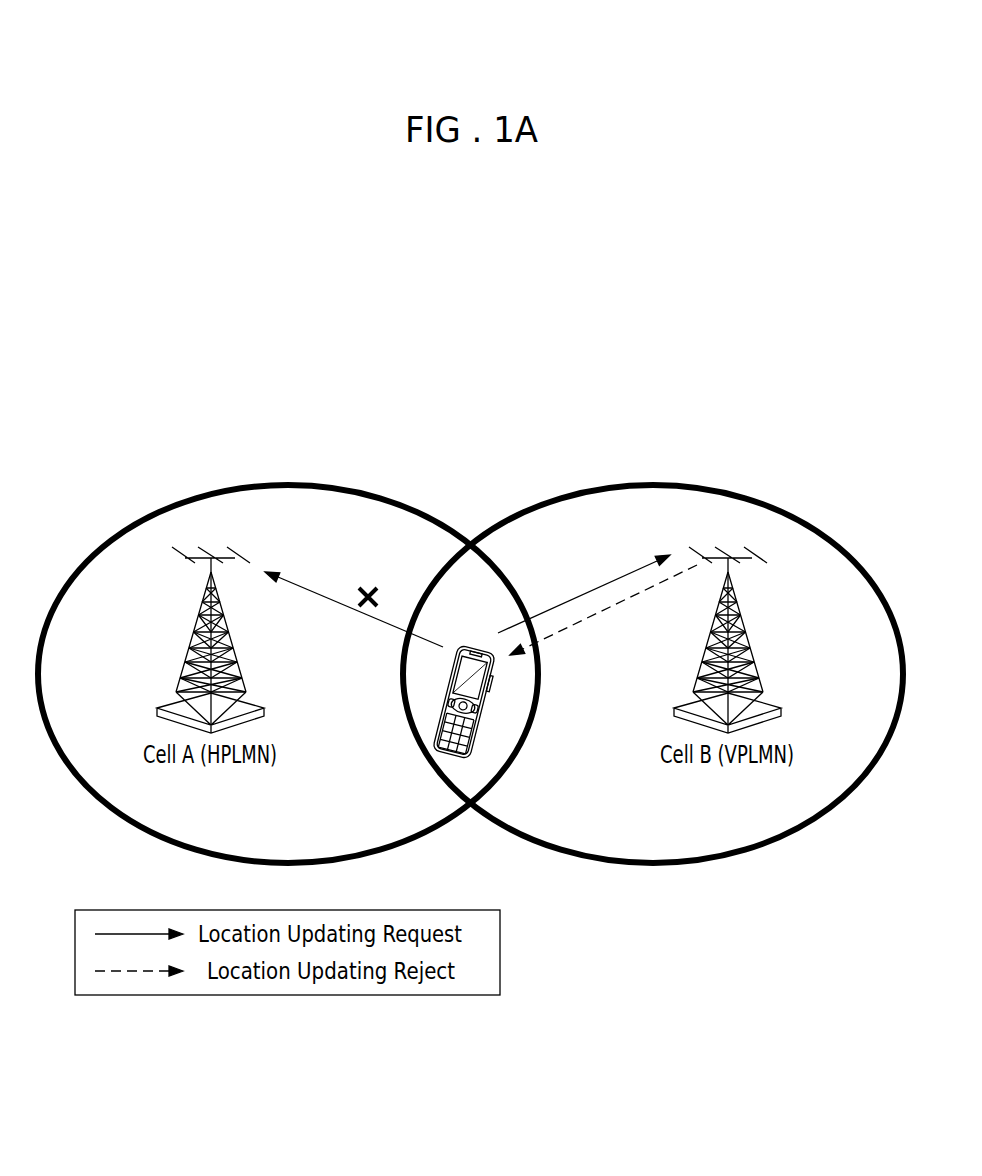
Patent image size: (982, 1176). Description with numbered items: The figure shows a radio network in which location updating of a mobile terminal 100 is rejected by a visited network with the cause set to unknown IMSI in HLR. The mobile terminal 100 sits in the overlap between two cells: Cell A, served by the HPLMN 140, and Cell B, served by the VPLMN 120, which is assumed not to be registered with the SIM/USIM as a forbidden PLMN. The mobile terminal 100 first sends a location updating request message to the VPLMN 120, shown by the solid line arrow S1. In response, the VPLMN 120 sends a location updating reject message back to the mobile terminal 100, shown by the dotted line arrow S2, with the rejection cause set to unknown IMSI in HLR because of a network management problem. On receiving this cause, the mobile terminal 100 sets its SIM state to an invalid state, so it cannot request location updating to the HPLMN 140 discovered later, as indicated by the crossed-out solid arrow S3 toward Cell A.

The mobile terminal 100 is at (478, 720).
The VPLMN 120 is at (752, 638).
The HPLMN 140 is at (190, 638).
The location updating request (solid line arrow) S1 is at (570, 598).
The location updating reject (dotted line arrow) S2 is at (628, 600).
The blocked location updating request to HPLMN (solid arrow) S3 is at (332, 597).